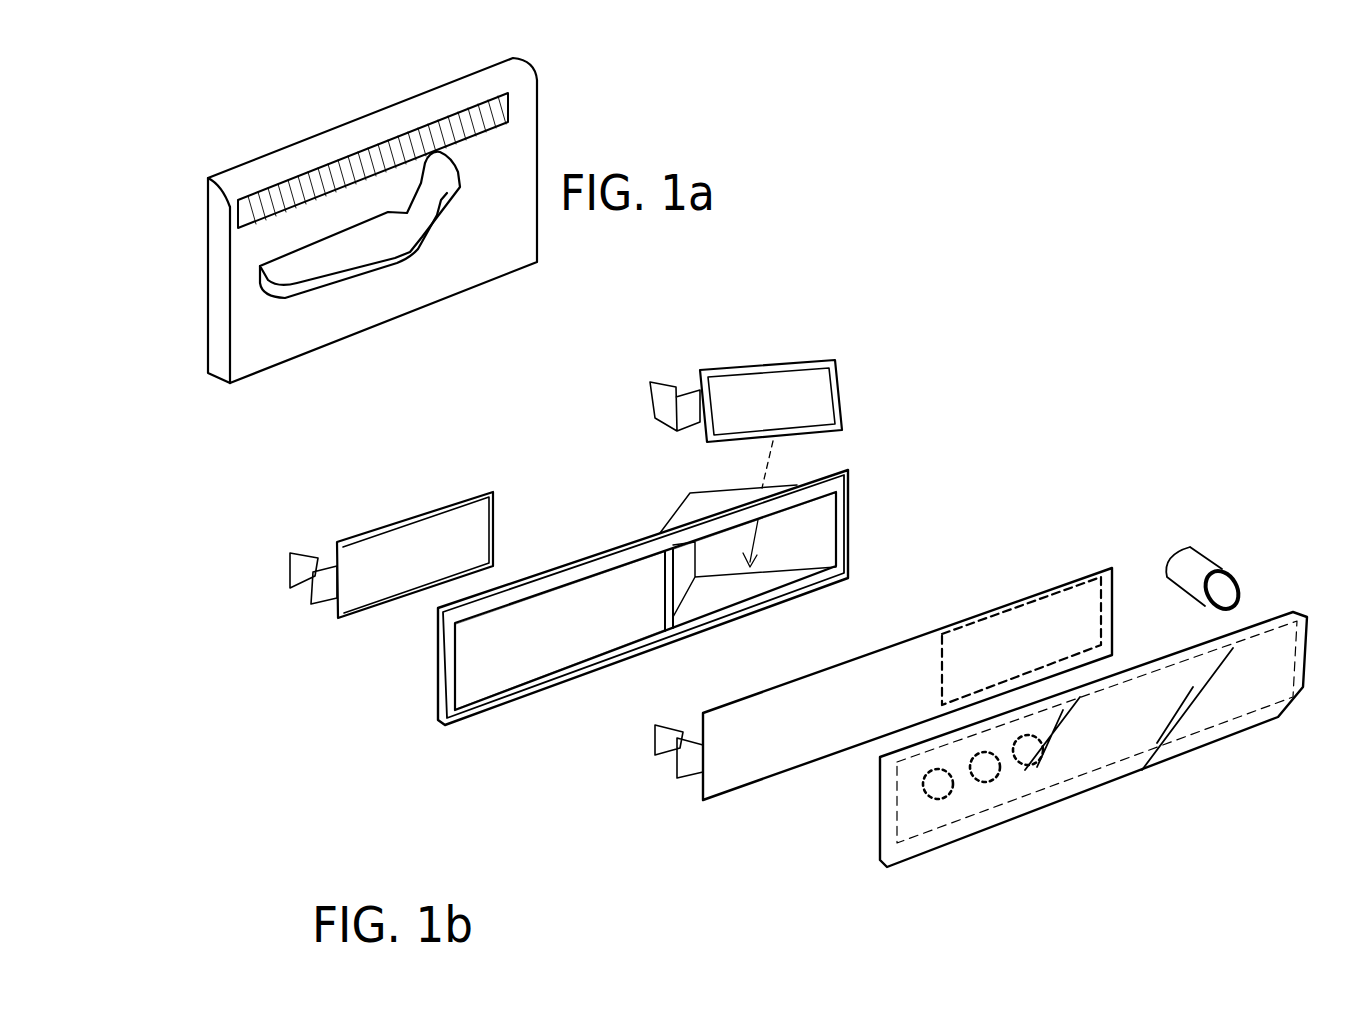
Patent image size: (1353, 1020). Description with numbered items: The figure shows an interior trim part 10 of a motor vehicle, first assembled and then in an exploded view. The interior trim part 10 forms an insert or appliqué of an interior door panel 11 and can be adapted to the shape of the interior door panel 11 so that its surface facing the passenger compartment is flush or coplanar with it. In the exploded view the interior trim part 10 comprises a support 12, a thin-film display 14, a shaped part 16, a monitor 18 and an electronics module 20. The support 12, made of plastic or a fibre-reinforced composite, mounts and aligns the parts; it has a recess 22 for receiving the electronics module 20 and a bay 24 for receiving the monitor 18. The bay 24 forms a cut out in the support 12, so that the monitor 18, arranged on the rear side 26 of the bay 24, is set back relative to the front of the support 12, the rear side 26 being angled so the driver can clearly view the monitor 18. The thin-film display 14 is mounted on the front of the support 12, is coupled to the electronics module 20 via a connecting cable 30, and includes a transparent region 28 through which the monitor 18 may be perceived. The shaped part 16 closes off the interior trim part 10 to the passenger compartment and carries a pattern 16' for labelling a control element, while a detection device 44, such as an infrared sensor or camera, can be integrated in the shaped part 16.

In FIG. 1A, the interior trim part 10 is at (234, 206).
In FIG. 1B, the interior trim part 10 is at (988, 362).
In FIG. 1A, the interior door panel 11 is at (317, 153).
In FIG. 1B, the support 12 is at (435, 656).
In FIG. 1B, the thin-film display 14 is at (778, 753).
In FIG. 1B, the shaped part 16 is at (1093, 764).
In FIG. 1B, the pattern 16' is at (912, 817).
In FIG. 1B, the monitor 18 is at (838, 395).
In FIG. 1B, the electronics module 20 is at (407, 550).
In FIG. 1B, the recess 22 is at (483, 637).
In FIG. 1B, the bay 24 is at (697, 513).
In FIG. 1B, the rear side 26 is at (812, 537).
In FIG. 1B, the transparent region 28 is at (1078, 607).
In FIG. 1B, the connecting cable 30 is at (657, 757).
In FIG. 1B, the detection device 44 is at (1223, 558).